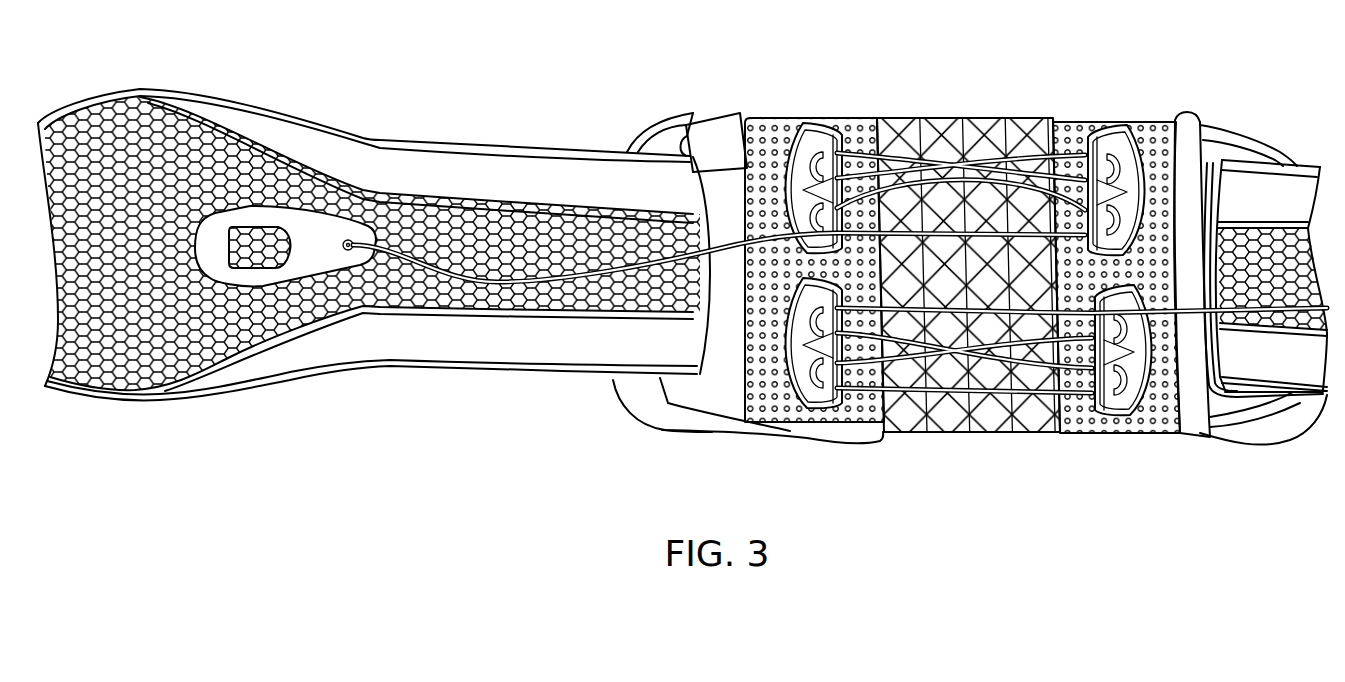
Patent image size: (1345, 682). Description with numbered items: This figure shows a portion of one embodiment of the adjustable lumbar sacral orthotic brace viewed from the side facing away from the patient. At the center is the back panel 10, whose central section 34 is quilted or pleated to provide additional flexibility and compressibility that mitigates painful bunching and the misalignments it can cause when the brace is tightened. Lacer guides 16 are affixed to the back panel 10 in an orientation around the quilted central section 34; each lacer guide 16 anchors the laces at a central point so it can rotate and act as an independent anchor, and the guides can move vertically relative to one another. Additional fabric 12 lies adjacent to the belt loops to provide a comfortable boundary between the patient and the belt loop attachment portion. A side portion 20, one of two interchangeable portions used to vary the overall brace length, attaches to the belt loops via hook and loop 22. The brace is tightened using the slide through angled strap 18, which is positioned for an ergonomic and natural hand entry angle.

The back panel 10 is at (968, 98).
The additional fabric adjacent to the belt loops 12 is at (727, 149).
The lacer guide 16 is at (805, 133).
The slide through angled strap 18 is at (327, 257).
The side portion 20 is at (408, 139).
The hook and loop 22 is at (131, 112).
The quilted central section 34 is at (1057, 442).